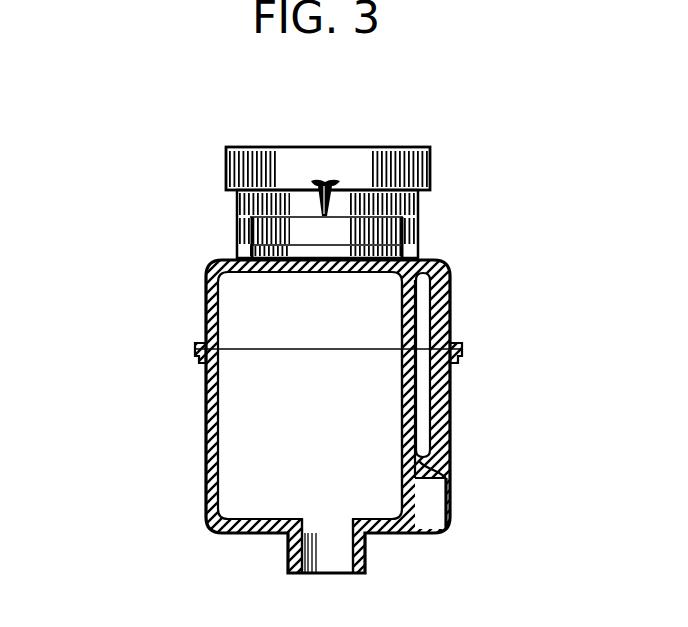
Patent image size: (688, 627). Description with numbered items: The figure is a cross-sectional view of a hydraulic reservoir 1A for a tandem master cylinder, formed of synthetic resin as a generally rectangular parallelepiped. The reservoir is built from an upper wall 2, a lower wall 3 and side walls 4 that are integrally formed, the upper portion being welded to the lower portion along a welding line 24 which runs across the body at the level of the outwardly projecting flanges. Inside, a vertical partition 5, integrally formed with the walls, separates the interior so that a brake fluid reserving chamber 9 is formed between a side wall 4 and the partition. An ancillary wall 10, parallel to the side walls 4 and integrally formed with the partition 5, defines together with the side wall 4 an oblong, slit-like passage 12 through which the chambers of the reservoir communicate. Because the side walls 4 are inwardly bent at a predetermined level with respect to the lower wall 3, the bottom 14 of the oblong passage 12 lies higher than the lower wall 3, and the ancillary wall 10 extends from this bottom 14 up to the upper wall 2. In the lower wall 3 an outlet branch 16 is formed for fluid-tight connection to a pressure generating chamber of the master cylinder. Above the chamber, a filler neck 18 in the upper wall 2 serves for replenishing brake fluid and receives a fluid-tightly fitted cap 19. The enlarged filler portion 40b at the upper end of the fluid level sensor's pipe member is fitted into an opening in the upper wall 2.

The hydraulic reservoir 1A is at (503, 213).
The upper wall 2 is at (240, 250).
The lower wall 3 is at (250, 526).
The side walls 4 is at (212, 392).
The vertical partition 5 is at (255, 320).
The brake fluid reserving chamber 9 is at (273, 462).
The ancillary wall 10 is at (408, 416).
The oblong passage 12 is at (427, 330).
The bottom of oblong passage 14 is at (450, 470).
The outlet branch 16 is at (347, 537).
The filler neck 18 is at (418, 240).
The cap 19 is at (360, 162).
The welding line 24 is at (357, 349).
The filler portion 40b is at (302, 214).